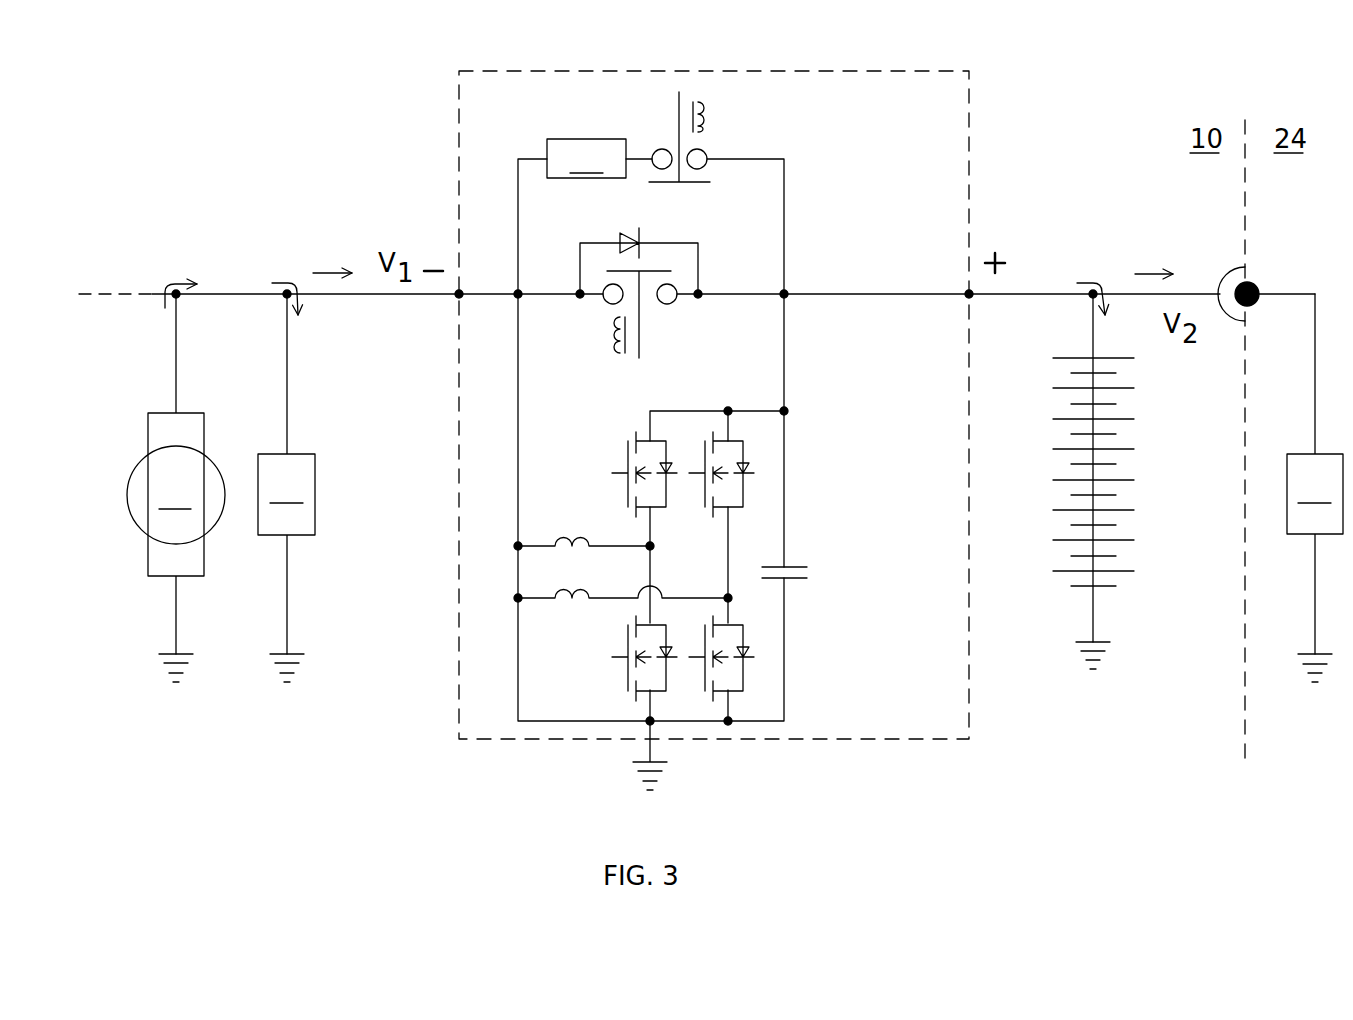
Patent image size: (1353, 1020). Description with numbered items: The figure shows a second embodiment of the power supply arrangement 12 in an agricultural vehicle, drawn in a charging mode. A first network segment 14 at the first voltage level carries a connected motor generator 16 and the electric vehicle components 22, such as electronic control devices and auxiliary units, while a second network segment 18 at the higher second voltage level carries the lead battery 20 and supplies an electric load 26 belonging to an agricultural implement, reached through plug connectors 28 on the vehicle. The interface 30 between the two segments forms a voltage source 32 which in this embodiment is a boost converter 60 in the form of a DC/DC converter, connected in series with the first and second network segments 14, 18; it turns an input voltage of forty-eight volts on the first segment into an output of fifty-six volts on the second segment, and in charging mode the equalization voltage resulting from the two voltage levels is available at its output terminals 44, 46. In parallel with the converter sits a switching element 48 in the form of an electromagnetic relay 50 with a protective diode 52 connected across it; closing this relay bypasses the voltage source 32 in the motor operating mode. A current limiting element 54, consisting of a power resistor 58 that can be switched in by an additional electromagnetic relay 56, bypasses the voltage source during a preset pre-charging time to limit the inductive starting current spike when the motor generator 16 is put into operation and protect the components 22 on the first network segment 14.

The power supply arrangement 12 is at (175, 128).
The first network segment 14 is at (247, 293).
The motor generator 16 is at (176, 488).
The second network segment 18 is at (1117, 293).
The lead battery 20 is at (1143, 468).
The electric vehicle components 22 is at (286, 488).
The electric load 26 is at (1315, 488).
The plug connectors 28 is at (1230, 273).
The interface 30 is at (430, 147).
The voltage source 32 is at (972, 142).
The output terminal 44 is at (458, 295).
The output terminal 46 is at (968, 293).
The switching element 48 is at (672, 320).
The electromagnetic relay 50 is at (623, 358).
The protective diode 52 is at (641, 232).
The current limiting element 54 is at (518, 95).
The additional electromagnetic relay 56 is at (698, 101).
The power resistor 58 is at (586, 158).
The boost converter 60 is at (490, 598).